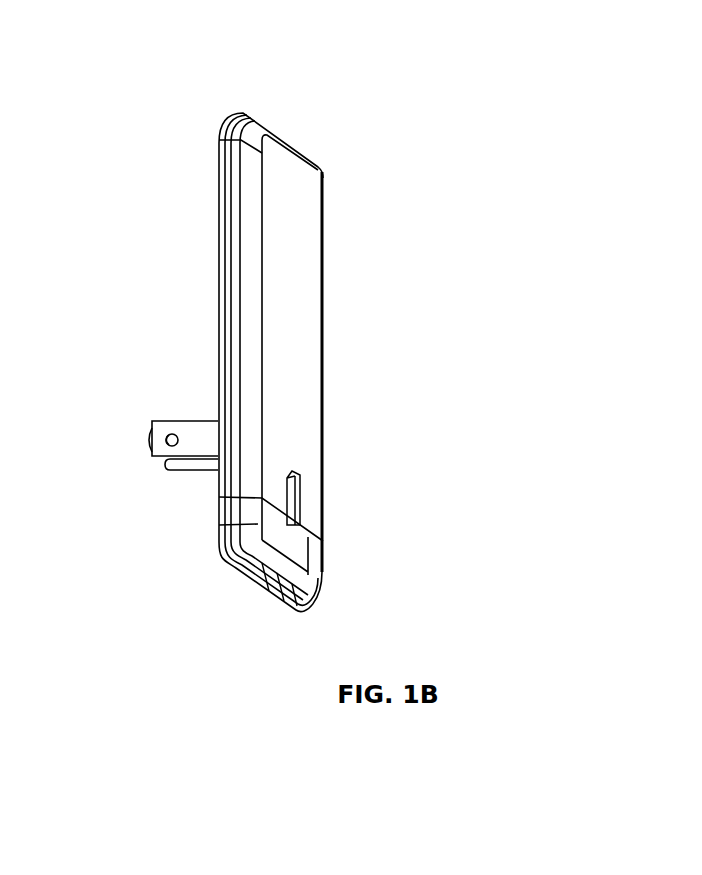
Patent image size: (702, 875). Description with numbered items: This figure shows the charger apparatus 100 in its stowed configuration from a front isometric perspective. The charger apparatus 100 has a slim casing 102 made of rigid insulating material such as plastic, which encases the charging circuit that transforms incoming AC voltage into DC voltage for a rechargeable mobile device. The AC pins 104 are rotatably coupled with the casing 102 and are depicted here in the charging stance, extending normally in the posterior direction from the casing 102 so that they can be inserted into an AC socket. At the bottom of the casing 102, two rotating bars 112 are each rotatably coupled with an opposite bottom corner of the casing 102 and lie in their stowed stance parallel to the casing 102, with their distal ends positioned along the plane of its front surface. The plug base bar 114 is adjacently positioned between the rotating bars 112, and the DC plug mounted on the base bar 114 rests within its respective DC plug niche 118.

The charger apparatus 100 is at (307, 113).
The casing 102 is at (328, 347).
The AC pins 104 is at (185, 421).
The rotating bars 112 is at (220, 535).
The plug base bar 114 is at (273, 583).
The DC plug niche 118 is at (307, 505).